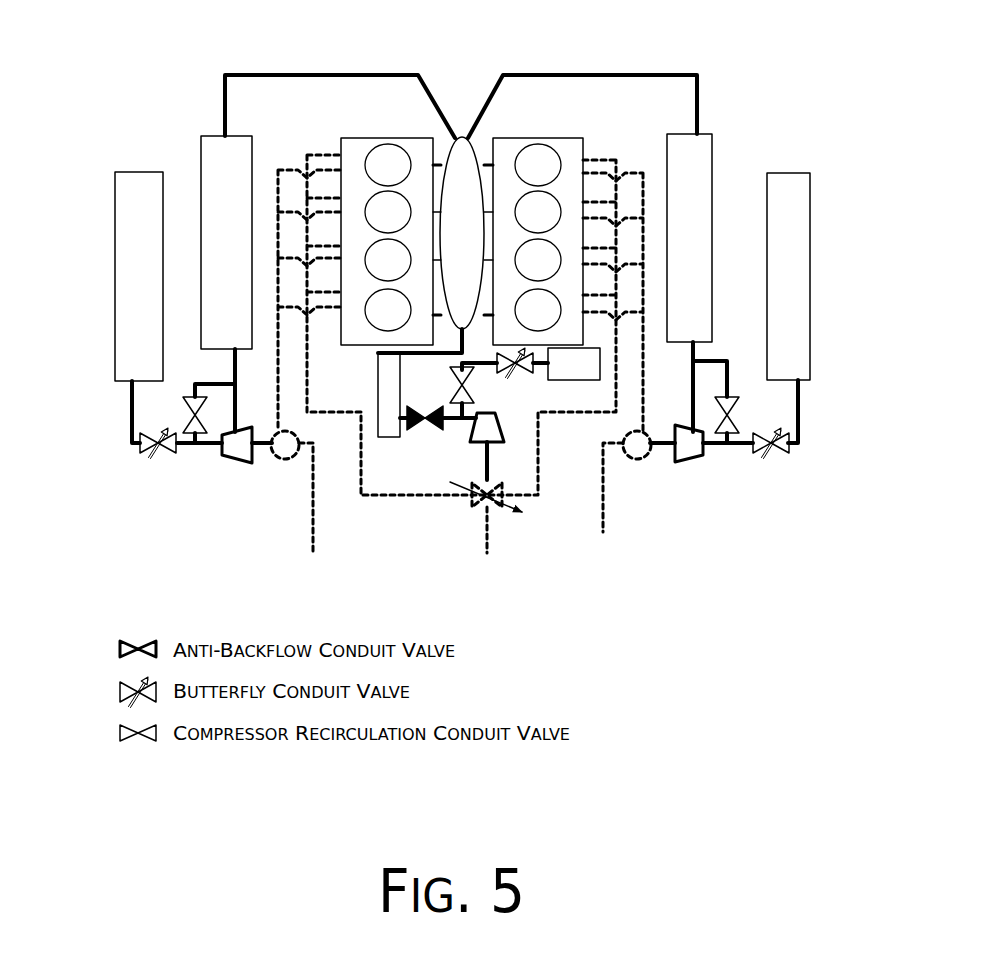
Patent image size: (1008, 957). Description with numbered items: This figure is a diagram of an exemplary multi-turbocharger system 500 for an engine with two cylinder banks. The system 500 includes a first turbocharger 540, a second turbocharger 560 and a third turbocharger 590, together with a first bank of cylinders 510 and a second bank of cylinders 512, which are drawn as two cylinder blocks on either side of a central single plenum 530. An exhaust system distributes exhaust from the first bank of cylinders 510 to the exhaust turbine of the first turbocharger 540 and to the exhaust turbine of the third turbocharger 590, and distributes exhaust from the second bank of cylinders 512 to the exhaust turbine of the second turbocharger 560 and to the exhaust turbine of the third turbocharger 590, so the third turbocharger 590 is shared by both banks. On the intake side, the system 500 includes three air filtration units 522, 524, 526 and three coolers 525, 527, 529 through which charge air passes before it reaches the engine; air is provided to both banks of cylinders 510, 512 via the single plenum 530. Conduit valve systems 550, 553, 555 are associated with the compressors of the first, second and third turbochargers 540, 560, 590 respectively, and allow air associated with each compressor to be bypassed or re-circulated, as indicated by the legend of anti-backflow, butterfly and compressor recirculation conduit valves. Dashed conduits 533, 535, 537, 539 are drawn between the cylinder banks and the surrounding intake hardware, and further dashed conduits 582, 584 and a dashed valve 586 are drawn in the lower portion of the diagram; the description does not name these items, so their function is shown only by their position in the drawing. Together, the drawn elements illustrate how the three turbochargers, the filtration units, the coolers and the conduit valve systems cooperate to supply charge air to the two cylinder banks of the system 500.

The multi-turbocharger system 500 is at (470, 18).
The first bank of cylinders 510 is at (400, 137).
The second bank of cylinders 512 is at (528, 137).
The air filtration unit 522 is at (150, 172).
The air filtration unit 524 is at (790, 173).
The cooler 525 is at (205, 136).
The air filtration unit 526 is at (592, 380).
The cooler 527 is at (707, 134).
The cooler 529 is at (378, 377).
The single plenum 530 is at (461, 135).
The first intake conduit 533 is at (307, 154).
The first intake manifold conduit 535 is at (277, 169).
The second intake conduit 537 is at (597, 158).
The second intake manifold conduit 539 is at (632, 174).
The first turbocharger 540 is at (252, 478).
The conduit valve system 550 is at (170, 468).
The conduit valve system 553 is at (763, 473).
The conduit valve system 555 is at (448, 440).
The second turbocharger 560 is at (667, 483).
The first bypass conduit 582 is at (313, 540).
The second bypass conduit 584 is at (603, 527).
The bypass butterfly conduit valve 586 is at (487, 540).
The third turbocharger 590 is at (455, 520).